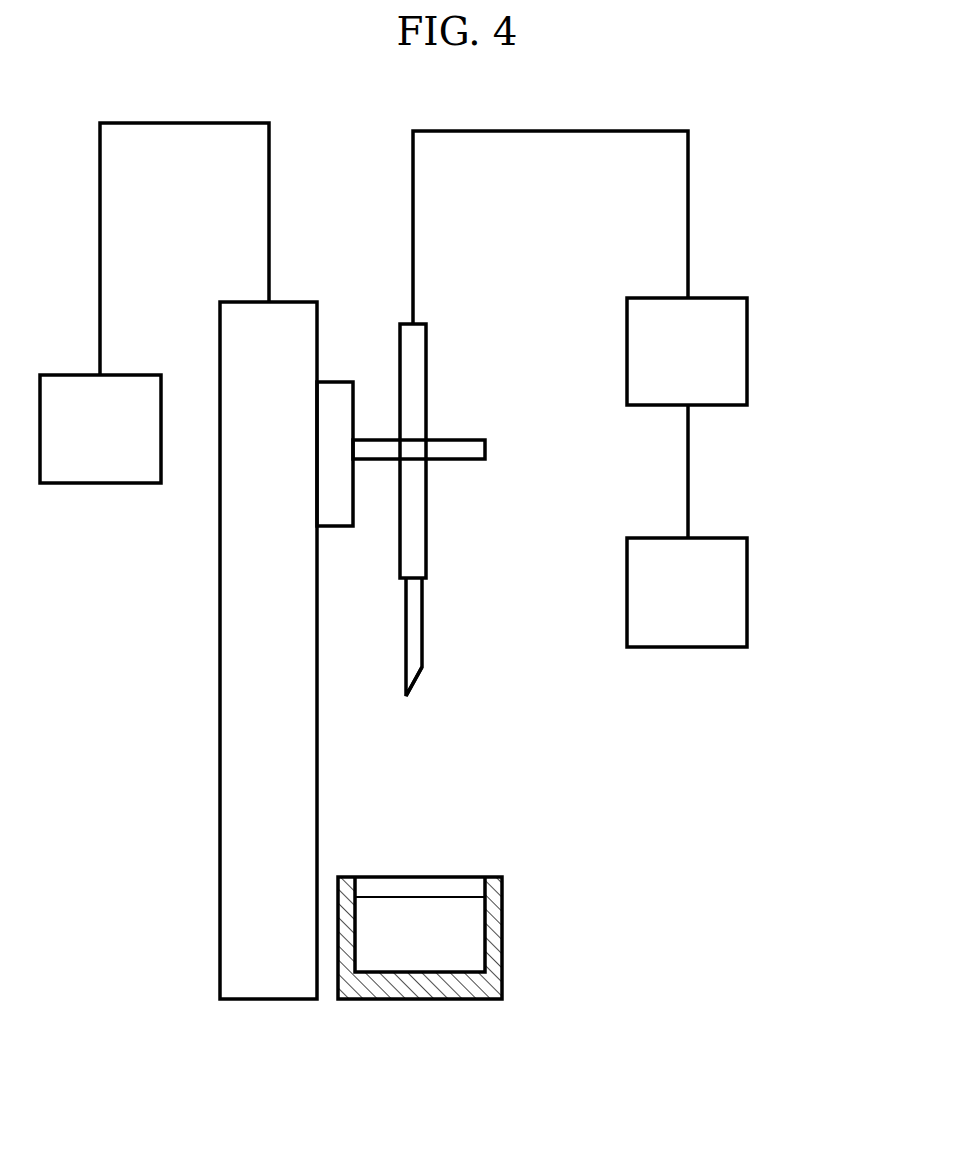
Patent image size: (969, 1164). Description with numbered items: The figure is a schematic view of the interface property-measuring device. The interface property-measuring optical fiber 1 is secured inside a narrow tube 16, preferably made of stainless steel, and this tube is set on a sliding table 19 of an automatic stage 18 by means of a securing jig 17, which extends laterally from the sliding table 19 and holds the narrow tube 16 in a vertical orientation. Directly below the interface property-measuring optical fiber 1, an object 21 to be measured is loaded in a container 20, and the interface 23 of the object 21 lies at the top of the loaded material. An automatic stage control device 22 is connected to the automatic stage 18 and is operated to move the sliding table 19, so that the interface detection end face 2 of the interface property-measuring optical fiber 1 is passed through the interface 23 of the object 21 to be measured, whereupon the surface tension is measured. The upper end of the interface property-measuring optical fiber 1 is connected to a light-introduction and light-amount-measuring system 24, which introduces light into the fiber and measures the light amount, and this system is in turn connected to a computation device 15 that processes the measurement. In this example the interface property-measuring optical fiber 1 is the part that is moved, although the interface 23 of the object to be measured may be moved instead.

The interface property-measuring optical fiber 1 is at (423, 627).
The interface detection end face 2 is at (413, 680).
The computation device 15 is at (748, 585).
The narrow tube 16 is at (427, 528).
The securing jig 17 is at (457, 437).
The automatic stage 18 is at (218, 760).
The sliding table 19 is at (334, 381).
The container 20 is at (503, 937).
The object to be measured 21 is at (448, 928).
The automatic stage control device 22 is at (87, 485).
The interface 23 is at (397, 897).
The light-introduction and light-amount-measuring system 24 is at (748, 347).